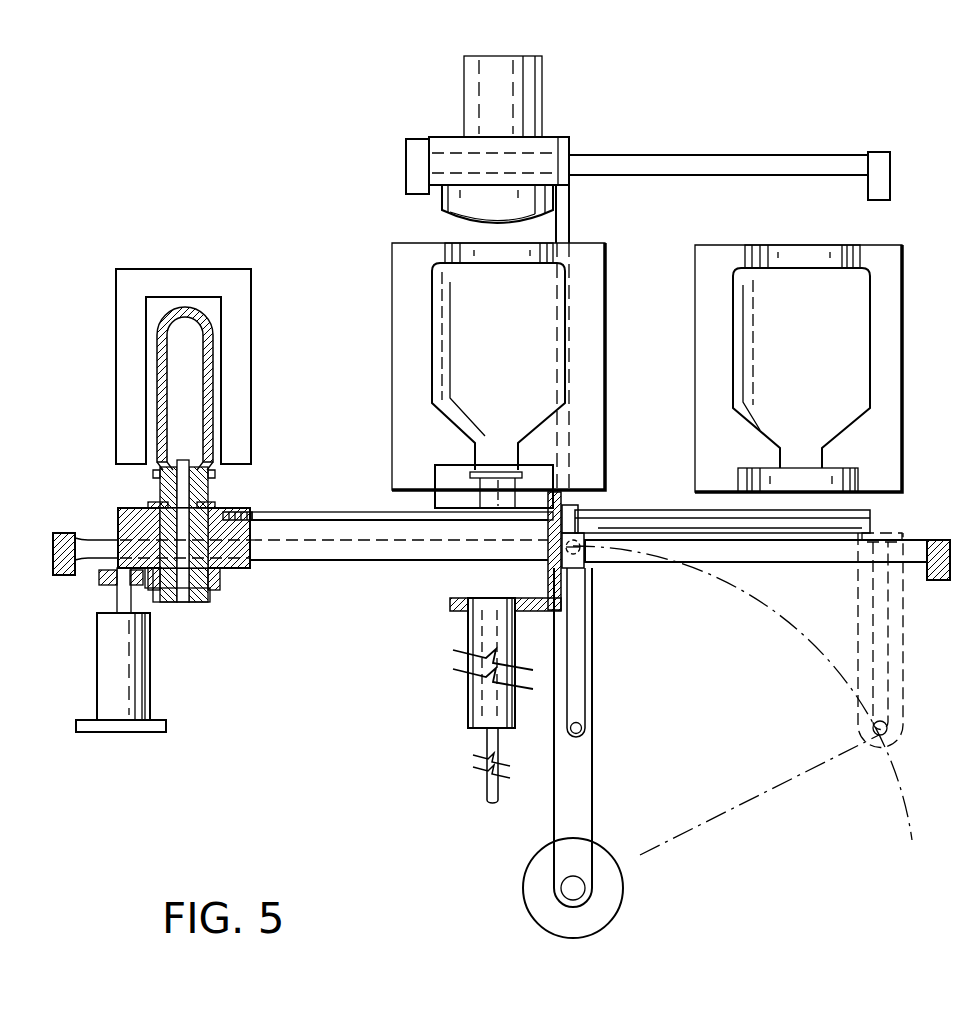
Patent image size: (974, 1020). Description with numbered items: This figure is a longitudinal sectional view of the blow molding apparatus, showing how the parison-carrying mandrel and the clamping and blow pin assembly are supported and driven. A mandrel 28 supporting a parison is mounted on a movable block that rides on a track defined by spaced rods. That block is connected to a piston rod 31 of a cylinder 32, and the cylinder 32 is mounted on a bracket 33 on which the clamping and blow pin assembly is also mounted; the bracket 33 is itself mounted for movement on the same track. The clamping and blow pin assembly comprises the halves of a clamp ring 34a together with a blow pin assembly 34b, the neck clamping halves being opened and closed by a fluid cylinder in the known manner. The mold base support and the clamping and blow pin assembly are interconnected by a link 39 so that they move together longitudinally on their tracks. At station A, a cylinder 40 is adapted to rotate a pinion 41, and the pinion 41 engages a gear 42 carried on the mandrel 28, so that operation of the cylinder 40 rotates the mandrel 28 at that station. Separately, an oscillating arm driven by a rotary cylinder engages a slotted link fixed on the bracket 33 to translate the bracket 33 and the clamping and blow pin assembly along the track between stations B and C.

The mandrel 28 is at (205, 490).
The piston rod 31 is at (317, 518).
The cylinder 32 is at (722, 513).
The bracket 33 is at (450, 615).
The clamp ring 34a is at (443, 477).
The blow pin assembly 34b is at (467, 633).
The link 39 is at (567, 332).
The cylinder 40 is at (125, 653).
The pinion 41 is at (98, 582).
The gear 42 is at (220, 592).